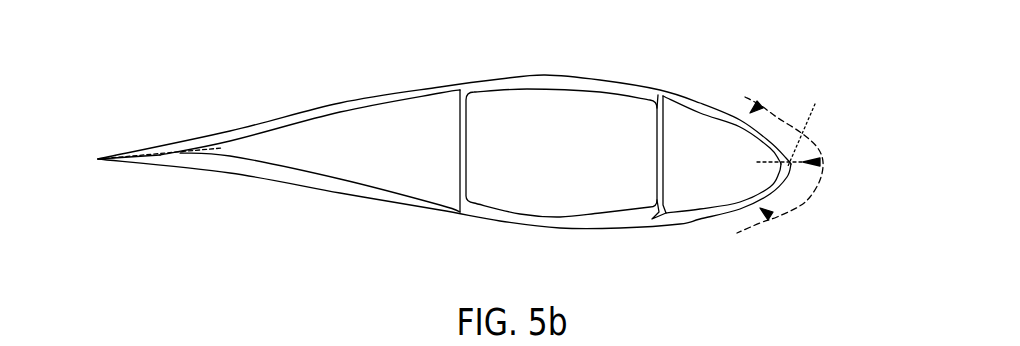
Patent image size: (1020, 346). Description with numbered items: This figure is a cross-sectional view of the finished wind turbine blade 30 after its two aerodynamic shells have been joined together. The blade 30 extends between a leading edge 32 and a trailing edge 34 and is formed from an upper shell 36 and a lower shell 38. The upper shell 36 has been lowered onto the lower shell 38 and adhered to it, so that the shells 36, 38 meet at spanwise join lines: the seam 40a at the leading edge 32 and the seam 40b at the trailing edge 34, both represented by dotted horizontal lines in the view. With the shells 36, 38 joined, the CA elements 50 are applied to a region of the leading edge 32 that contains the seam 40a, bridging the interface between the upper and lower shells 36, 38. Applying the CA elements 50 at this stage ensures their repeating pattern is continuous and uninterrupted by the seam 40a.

The blade 30 is at (485, 135).
The leading edge 32 is at (847, 162).
The trailing edge 34 is at (80, 156).
The upper shell 36 is at (562, 75).
The lower shell 38 is at (477, 218).
The seam 40a is at (807, 123).
The seam 40b is at (140, 150).
The CA elements 50 is at (798, 207).